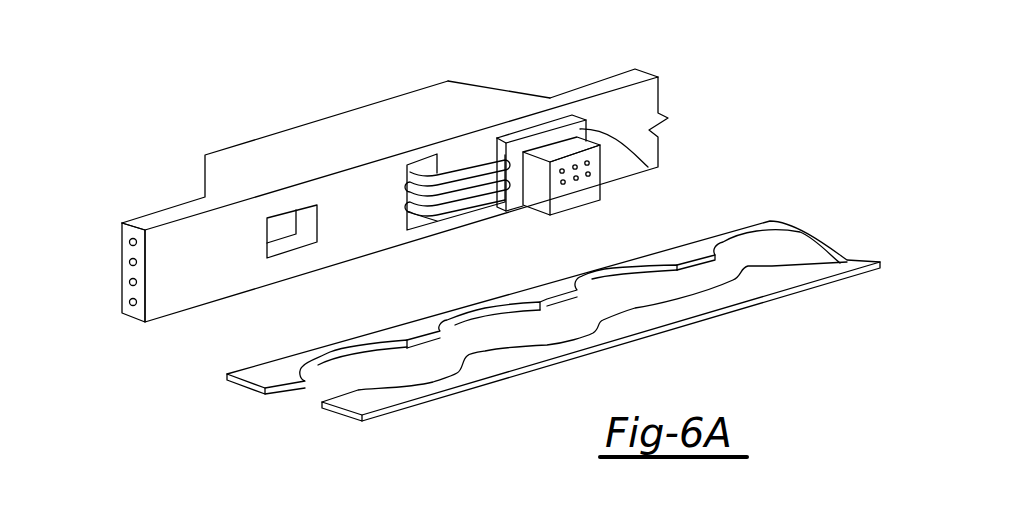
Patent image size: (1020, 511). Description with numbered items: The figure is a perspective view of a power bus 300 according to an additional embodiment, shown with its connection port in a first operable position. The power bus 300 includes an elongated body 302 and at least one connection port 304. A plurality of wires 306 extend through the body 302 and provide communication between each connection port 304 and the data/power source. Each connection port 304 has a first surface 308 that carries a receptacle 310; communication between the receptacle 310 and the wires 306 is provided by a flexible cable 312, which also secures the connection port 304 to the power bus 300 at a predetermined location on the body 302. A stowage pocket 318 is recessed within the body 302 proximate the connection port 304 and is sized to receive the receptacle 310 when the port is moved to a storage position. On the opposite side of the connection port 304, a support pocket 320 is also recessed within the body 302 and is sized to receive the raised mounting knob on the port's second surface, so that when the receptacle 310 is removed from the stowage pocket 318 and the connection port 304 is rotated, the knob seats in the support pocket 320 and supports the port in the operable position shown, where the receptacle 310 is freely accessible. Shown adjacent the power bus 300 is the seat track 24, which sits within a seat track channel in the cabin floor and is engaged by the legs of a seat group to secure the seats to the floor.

The power bus 300 is at (196, 105).
The elongated body 302 is at (638, 101).
The connection port 304 is at (525, 120).
The wires 306 is at (129, 283).
The first surface 308 is at (659, 167).
The receptacle 310 is at (593, 183).
The flexible cable 312 is at (471, 168).
The stowage pocket 318 is at (307, 228).
The support pocket 320 is at (548, 99).
The seat track 24 is at (320, 416).